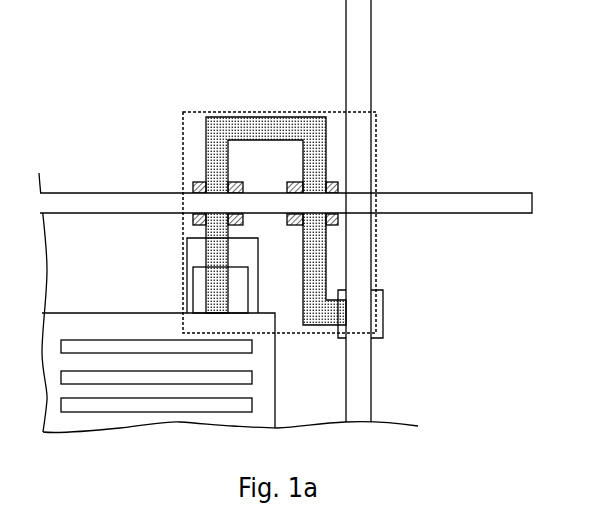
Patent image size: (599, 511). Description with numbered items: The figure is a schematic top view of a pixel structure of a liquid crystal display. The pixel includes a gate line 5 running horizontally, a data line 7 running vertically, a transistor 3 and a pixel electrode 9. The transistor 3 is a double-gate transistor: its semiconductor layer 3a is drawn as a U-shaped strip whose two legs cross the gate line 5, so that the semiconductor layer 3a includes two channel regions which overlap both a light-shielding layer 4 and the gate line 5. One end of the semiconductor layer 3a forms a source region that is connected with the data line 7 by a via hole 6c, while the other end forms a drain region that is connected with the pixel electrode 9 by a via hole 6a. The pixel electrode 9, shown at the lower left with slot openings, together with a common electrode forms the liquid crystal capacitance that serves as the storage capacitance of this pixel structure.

The transistor 3 is at (182, 168).
The semiconductor layer 3a is at (267, 118).
The light-shielding layer 4 is at (338, 183).
The gate line 5 is at (440, 205).
The via hole 6a is at (193, 285).
The via hole 6c is at (383, 313).
The data line 7 is at (371, 24).
The pixel electrode 9 is at (277, 403).